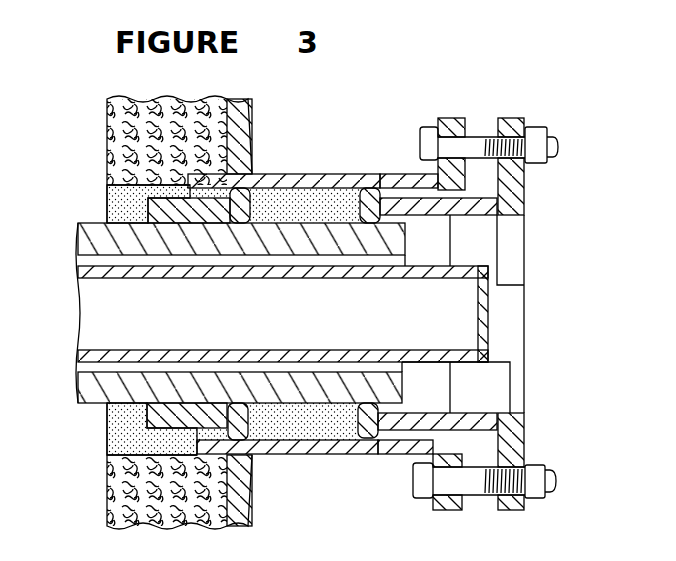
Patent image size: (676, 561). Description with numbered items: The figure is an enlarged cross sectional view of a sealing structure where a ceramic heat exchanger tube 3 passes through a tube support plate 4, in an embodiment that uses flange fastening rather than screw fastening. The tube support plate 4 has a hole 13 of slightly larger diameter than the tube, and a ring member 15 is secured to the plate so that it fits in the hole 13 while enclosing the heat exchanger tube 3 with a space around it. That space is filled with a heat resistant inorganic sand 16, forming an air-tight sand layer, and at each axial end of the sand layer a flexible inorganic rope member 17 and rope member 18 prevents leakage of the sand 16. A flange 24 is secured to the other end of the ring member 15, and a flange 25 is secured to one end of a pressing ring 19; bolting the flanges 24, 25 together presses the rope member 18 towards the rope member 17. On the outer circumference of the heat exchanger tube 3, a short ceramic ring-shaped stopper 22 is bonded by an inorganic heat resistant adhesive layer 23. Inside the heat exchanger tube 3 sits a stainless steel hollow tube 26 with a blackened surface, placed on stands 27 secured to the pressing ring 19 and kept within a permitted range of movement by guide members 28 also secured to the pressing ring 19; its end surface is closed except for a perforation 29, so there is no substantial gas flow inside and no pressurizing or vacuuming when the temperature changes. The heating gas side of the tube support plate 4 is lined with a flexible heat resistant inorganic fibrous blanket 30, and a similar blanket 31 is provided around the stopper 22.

The heat exchanger tube 3 is at (336, 230).
The tube support plate 4 is at (237, 130).
The hole 13 is at (240, 190).
The ring member 15 is at (318, 190).
The heat resistant inorganic sand 16 is at (344, 187).
The rope member 17 is at (273, 182).
The rope member 18 is at (388, 203).
The pressing ring 19 is at (408, 176).
The ring-shaped stopper 22 is at (161, 205).
The inorganic heat resistant adhesive layer 23 is at (188, 200).
The flange 24 is at (452, 118).
The flange 25 is at (513, 118).
The hollow tube 26 is at (455, 262).
The stands 27 is at (483, 384).
The guide members 28 is at (500, 256).
The perforation 29 is at (488, 312).
The inorganic fibrous blanket 30 is at (152, 136).
The blanket 31 is at (113, 206).